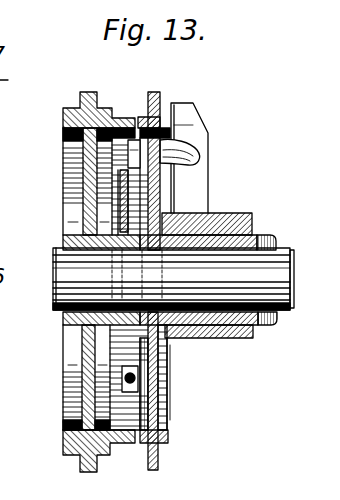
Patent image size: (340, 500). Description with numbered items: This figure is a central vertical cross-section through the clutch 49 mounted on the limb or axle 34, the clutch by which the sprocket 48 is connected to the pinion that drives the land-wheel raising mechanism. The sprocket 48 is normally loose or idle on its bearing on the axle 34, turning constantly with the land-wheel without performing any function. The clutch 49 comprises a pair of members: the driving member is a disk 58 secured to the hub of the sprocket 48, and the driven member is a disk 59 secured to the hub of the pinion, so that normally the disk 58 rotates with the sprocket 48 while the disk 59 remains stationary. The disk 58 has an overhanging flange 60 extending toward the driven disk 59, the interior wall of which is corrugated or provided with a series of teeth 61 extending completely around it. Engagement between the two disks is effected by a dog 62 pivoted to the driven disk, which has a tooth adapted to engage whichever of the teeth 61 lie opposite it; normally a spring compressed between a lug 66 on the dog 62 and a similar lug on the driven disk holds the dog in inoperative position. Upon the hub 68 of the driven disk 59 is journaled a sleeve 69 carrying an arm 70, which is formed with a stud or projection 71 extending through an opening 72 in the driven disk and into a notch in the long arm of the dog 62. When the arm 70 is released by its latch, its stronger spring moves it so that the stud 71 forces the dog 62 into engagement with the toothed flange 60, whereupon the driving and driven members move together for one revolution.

The limb or axle 34 is at (53, 297).
The sprocket 48 is at (80, 463).
The clutch 49 is at (165, 443).
The disk 58 is at (68, 430).
The disk 59 is at (160, 380).
The overhanging flange 60 is at (134, 443).
The teeth 61 is at (68, 413).
The dog 62 is at (80, 201).
The lug 66 is at (66, 372).
The hub 68 is at (256, 233).
The sleeve 69 is at (228, 228).
The arm 70 is at (208, 136).
The stud or projection 71 is at (112, 150).
The opening 72 is at (163, 128).